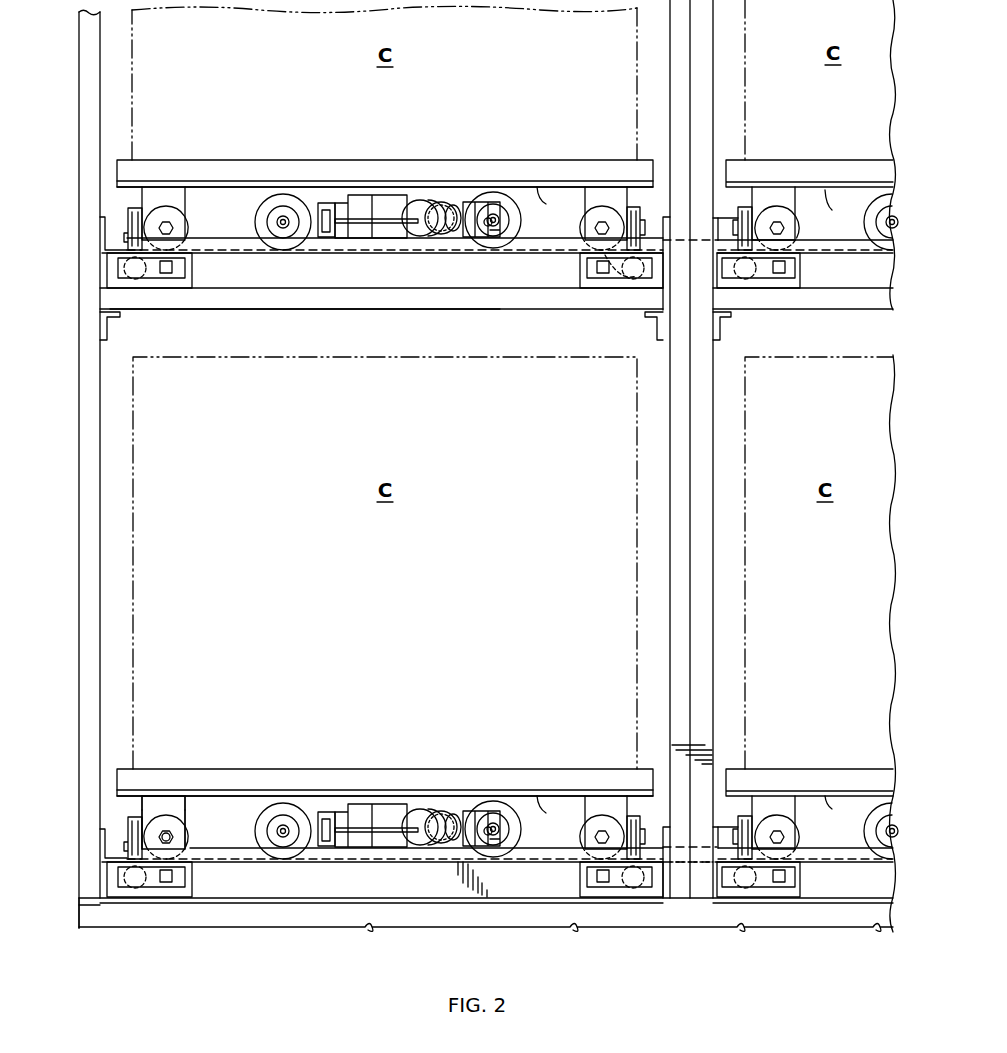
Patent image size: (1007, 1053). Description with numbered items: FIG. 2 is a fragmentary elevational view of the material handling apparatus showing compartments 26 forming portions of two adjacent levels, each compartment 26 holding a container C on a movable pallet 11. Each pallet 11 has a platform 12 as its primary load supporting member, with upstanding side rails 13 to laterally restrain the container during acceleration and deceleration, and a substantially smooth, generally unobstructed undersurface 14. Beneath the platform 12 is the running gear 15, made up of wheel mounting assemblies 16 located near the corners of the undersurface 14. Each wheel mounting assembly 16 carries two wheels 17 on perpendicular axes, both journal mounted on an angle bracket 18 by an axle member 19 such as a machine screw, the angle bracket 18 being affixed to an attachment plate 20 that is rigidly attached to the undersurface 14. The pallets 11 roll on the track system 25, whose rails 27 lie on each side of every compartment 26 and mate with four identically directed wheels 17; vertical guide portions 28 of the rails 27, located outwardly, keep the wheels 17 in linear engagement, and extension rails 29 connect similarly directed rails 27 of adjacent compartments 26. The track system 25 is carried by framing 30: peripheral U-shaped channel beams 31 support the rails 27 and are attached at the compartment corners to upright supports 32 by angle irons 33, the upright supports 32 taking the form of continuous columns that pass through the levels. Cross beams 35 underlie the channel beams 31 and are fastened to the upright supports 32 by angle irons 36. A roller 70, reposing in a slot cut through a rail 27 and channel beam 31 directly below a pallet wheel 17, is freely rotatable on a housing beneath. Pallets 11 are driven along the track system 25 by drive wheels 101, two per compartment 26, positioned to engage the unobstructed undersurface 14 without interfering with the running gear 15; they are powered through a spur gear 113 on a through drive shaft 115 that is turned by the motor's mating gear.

The movable pallet 11 is at (294, 151).
The platform 12 is at (870, 185).
The upstanding side rails 13 is at (507, 170).
The undersurface 14 is at (696, 507).
The running gear 15 is at (612, 176).
The wheel mounting assembly 16 is at (193, 816).
The wheel 17 is at (168, 213).
The angle bracket 18 is at (180, 798).
The axle member 19 is at (172, 838).
The attachment plate 20 is at (155, 795).
The track system 25 is at (242, 226).
The compartment 26 is at (110, 509).
The rail 27 is at (296, 258).
The vertical guide portion 28 is at (126, 247).
The extension rail 29 is at (692, 850).
The framing 30 is at (417, 312).
The U-shaped channel beam 31 is at (562, 278).
The upright support 32 is at (90, 600).
The angle iron 33 is at (100, 228).
The cross beam 35 is at (340, 300).
The angle iron 36 is at (107, 327).
The roller 70 is at (606, 275).
The drive wheel 101 is at (295, 194).
The spur gear 113 is at (425, 214).
The through drive shaft 115 is at (383, 220).